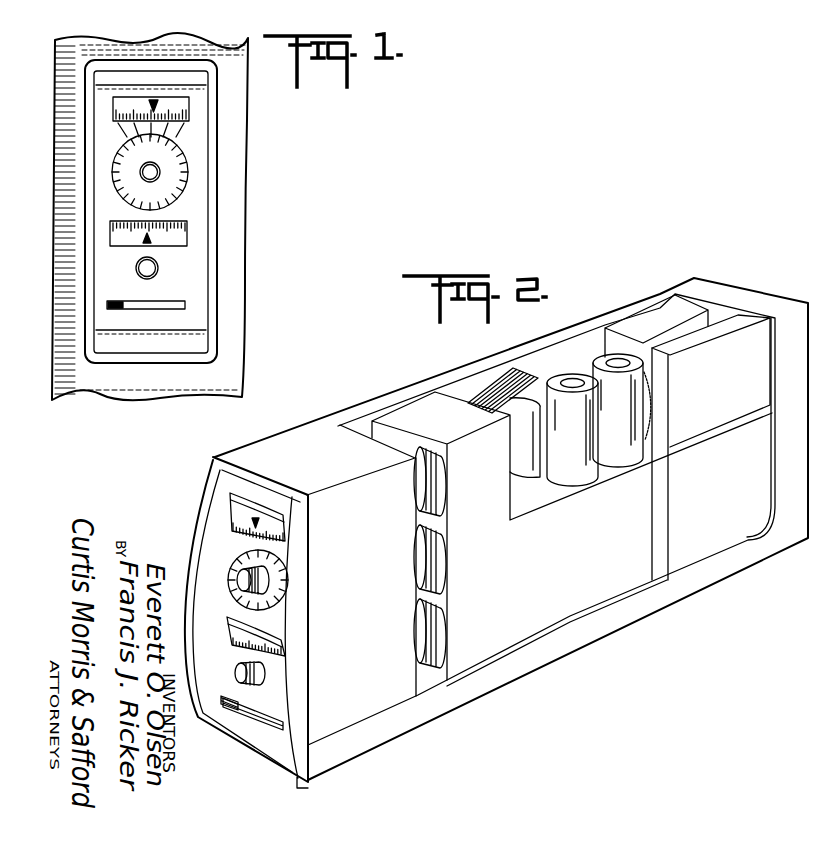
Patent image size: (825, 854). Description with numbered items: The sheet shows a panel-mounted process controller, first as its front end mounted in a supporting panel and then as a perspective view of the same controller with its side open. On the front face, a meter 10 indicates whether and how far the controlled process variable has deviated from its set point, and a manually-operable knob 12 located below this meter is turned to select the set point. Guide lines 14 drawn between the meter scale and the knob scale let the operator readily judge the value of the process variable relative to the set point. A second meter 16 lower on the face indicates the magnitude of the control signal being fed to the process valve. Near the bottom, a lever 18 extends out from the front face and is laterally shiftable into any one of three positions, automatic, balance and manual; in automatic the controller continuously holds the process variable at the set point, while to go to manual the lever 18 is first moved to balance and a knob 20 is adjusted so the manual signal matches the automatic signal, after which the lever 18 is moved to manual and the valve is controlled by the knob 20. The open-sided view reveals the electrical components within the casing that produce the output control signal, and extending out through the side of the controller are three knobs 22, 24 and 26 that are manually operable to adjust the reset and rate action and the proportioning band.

In FIG. 1, the meter 10 is at (187, 107).
In FIG. 2, the meter 10 is at (228, 500).
In FIG. 1, the manually-operable knob 12 is at (145, 178).
In FIG. 2, the manually-operable knob 12 is at (266, 582).
In FIG. 1, the guide lines 14 is at (157, 124).
In FIG. 2, the guide lines 14 is at (230, 538).
In FIG. 1, the second meter 16 is at (187, 233).
In FIG. 2, the second meter 16 is at (284, 652).
In FIG. 1, the lever 18 is at (126, 305).
In FIG. 2, the lever 18 is at (235, 708).
In FIG. 1, the knob 20 is at (139, 271).
In FIG. 2, the knob 20 is at (261, 678).
In FIG. 2, the knob 22 is at (438, 474).
In FIG. 2, the knob 24 is at (438, 546).
In FIG. 2, the knob 26 is at (438, 618).